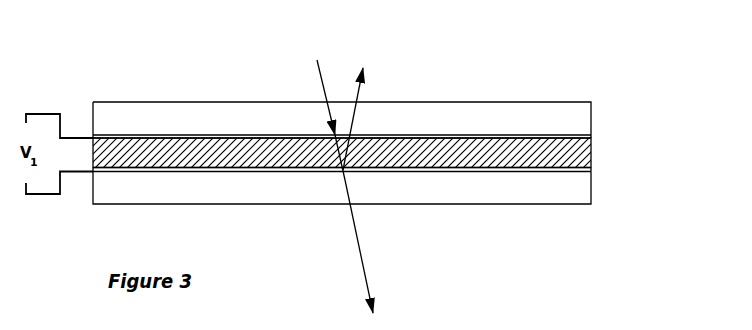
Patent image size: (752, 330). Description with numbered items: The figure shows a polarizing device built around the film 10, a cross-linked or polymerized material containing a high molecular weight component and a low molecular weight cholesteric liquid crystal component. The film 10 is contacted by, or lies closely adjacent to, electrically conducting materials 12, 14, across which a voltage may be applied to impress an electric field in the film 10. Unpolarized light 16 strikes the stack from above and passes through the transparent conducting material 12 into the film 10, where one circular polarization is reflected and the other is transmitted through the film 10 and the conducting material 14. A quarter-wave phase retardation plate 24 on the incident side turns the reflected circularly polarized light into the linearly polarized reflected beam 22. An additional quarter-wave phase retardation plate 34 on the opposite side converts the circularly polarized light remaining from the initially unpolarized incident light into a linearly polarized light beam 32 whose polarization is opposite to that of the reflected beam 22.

The film 10 is at (591, 156).
The electrically conducting material 12 is at (591, 136).
The electrically conducting material 14 is at (591, 170).
The unpolarized light 16 is at (318, 76).
The reflected beam 22 is at (412, 72).
The π/4 phase retardation plate 24 is at (591, 117).
The linearly polarized light beam 32 is at (410, 268).
The additional π/4 phase retardation plate 34 is at (591, 187).